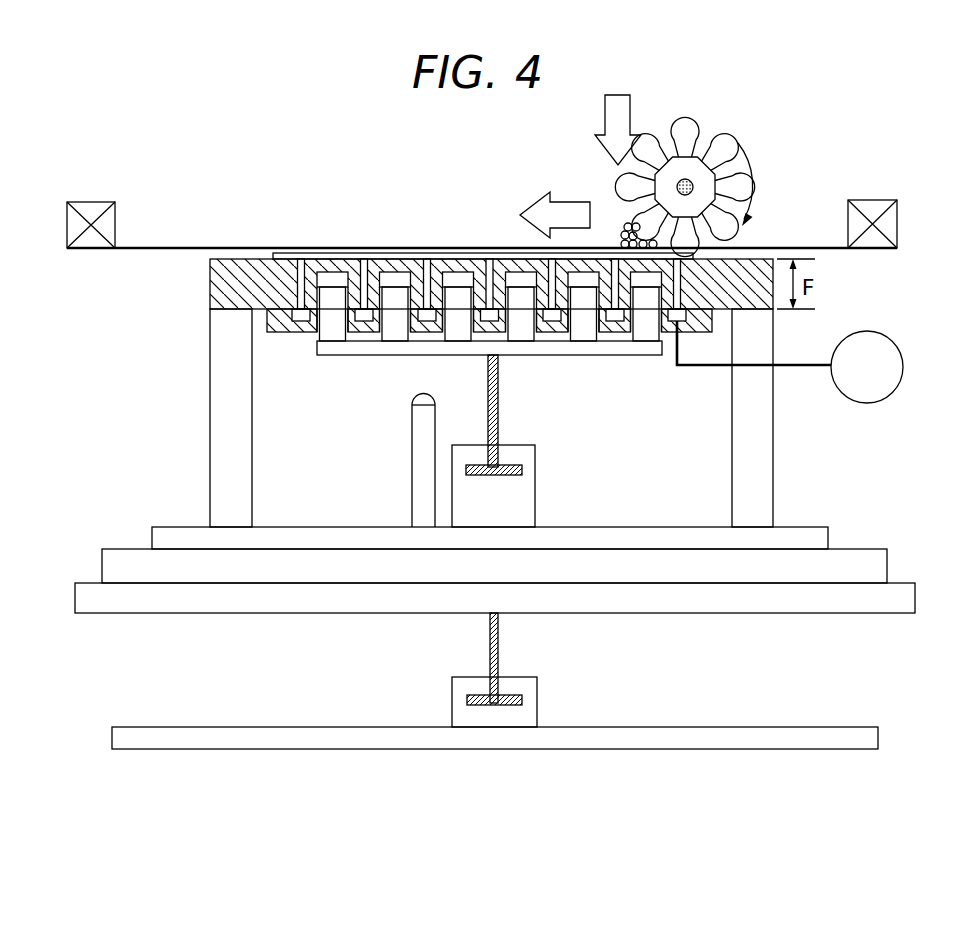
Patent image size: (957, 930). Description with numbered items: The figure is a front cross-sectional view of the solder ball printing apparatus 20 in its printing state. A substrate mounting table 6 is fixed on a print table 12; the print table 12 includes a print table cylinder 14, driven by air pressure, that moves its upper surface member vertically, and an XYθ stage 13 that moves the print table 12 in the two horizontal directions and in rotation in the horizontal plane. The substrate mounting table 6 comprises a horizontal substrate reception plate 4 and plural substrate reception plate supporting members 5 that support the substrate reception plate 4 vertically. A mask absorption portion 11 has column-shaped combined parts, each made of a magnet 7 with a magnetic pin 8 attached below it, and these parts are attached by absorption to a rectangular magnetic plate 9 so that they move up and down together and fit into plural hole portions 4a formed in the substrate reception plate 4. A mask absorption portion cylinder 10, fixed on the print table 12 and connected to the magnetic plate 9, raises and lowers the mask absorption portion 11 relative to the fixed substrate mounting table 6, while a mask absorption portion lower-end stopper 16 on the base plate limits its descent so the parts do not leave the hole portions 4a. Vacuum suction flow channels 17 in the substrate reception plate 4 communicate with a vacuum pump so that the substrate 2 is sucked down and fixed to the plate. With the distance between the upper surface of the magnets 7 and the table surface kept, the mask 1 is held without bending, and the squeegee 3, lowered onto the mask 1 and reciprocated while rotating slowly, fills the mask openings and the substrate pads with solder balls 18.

The mask 1 is at (337, 247).
The substrate 2 is at (295, 257).
The squeegee 3 is at (632, 180).
The substrate reception plate 4 is at (748, 320).
The hole portions 4a is at (443, 270).
The substrate reception plate supporting members 5 is at (763, 452).
The substrate mounting table 6 is at (826, 403).
The magnets 7 is at (328, 280).
The magnetic pins 8 is at (328, 317).
The magnetic plate 9 is at (325, 347).
The mask absorption portion cylinder 10 is at (525, 480).
The mask absorption portion 11 is at (449, 276).
The print table 12 is at (112, 568).
The XYθ stage 13 is at (120, 740).
The print table cylinder 14 is at (530, 697).
The mask absorption portion lower-end stopper 16 is at (420, 470).
The vacuum suction flow channels 17 is at (428, 268).
The solder balls 18 is at (620, 232).
The solder ball printing apparatus 20 is at (178, 204).